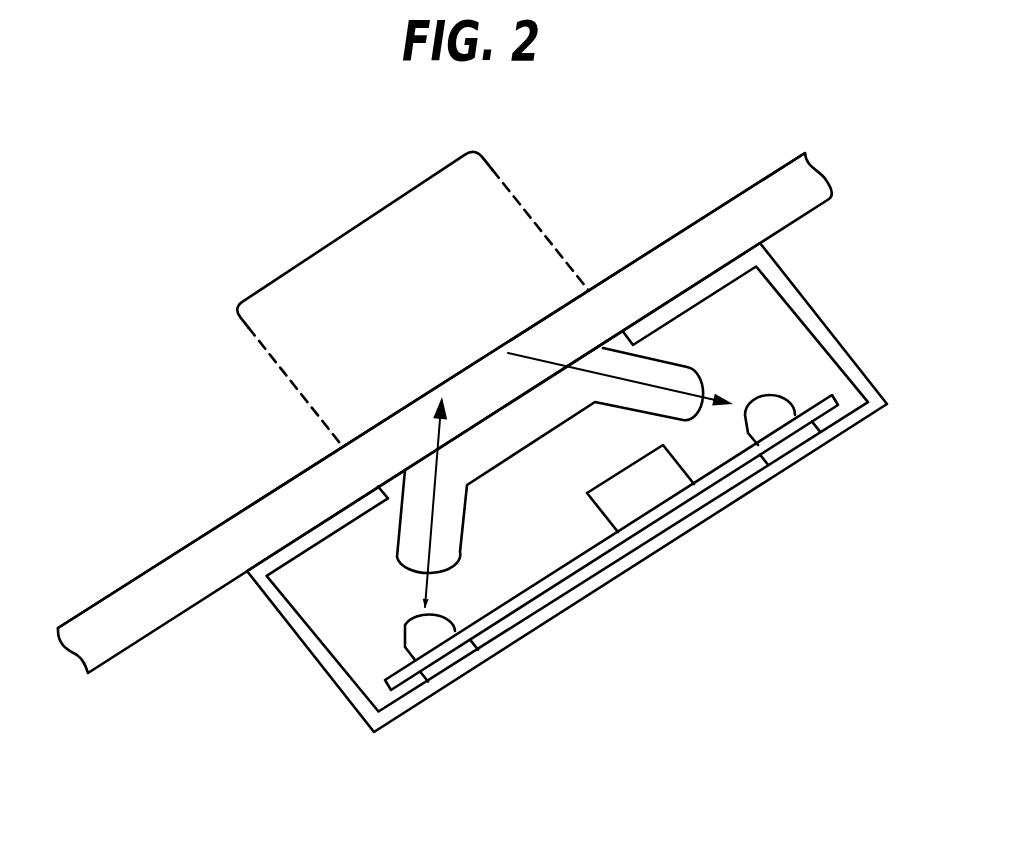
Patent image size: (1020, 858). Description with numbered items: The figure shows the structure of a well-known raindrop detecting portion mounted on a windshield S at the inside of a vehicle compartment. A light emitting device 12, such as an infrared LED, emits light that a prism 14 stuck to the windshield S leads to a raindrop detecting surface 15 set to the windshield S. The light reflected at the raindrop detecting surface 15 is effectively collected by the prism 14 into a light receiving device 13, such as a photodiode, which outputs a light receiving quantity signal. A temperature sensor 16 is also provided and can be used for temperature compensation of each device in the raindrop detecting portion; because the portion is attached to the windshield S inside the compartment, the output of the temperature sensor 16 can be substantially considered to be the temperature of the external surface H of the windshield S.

The light emitting device 12 is at (405, 633).
The light receiving device 13 is at (765, 392).
The prism 14 is at (467, 517).
The raindrop detecting surface 15 is at (365, 221).
The temperature sensor 16 is at (625, 495).
The external surface H is at (247, 508).
The windshield S is at (142, 597).